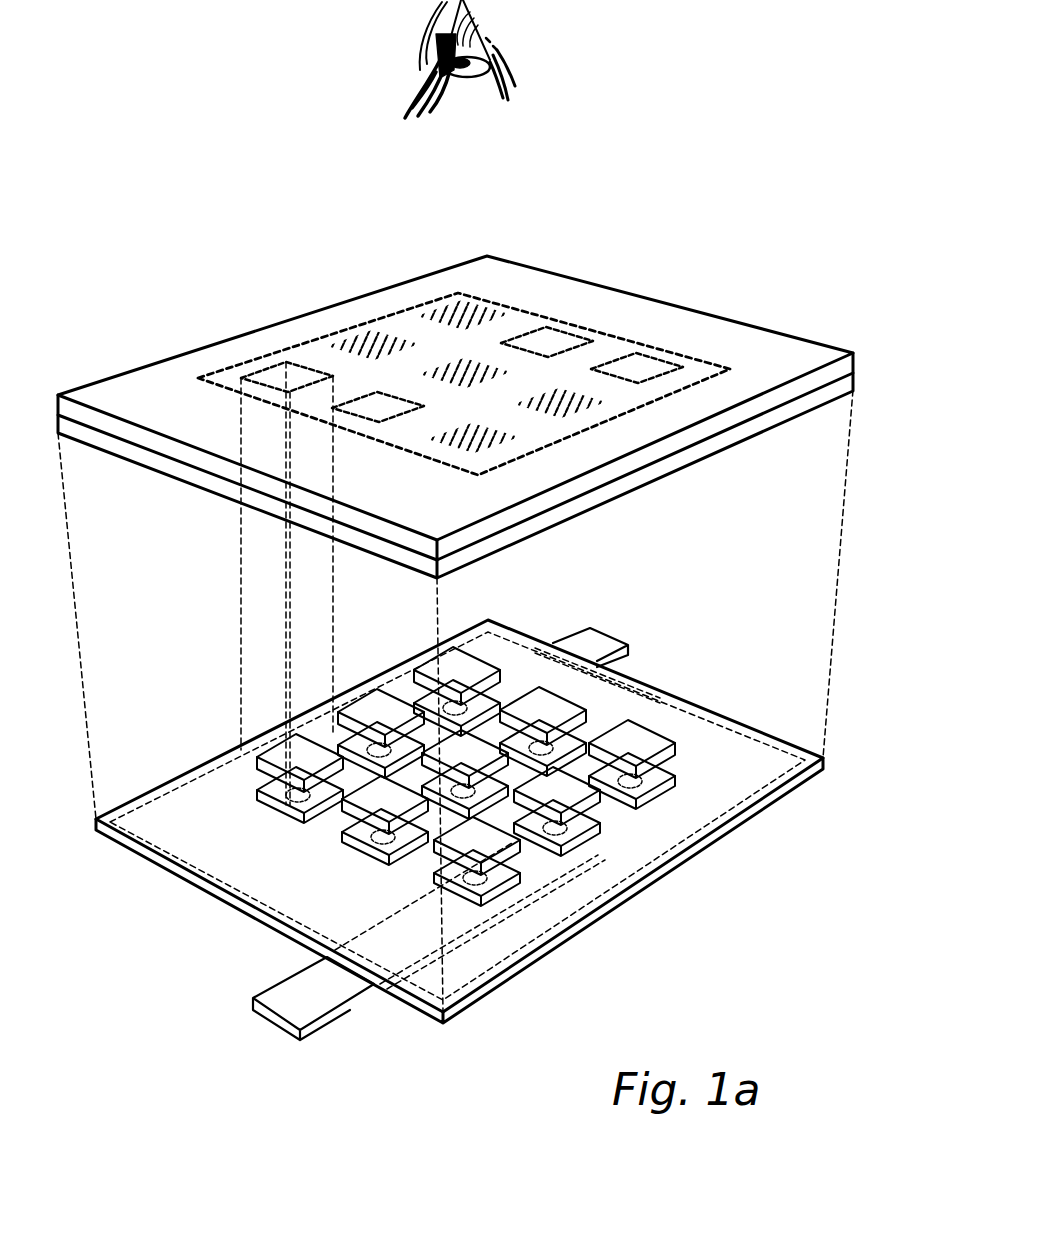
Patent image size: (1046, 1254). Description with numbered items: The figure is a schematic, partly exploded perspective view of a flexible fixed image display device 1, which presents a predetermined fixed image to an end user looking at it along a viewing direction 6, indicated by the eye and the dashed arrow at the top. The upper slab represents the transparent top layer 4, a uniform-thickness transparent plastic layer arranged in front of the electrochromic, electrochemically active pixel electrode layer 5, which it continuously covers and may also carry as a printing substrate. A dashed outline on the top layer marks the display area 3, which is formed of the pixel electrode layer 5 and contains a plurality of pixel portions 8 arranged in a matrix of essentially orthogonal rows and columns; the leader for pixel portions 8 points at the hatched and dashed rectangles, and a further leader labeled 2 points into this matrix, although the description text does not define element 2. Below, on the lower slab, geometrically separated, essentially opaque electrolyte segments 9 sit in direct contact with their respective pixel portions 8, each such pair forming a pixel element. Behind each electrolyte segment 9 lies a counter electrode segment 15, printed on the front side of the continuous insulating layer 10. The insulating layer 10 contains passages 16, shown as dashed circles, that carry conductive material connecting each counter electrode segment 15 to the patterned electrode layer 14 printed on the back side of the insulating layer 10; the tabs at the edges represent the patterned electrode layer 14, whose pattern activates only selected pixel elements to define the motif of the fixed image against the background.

The flexible fixed image display device 1 is at (163, 188).
The hatched electrode pad 2 is at (405, 320).
The display area 3 is at (603, 332).
The transparent top layer 4 is at (145, 438).
The pixel electrode layer 5 is at (178, 468).
The viewing direction 6 is at (462, 88).
The pixel portions 8 is at (688, 400).
The electrolyte segments 9 is at (645, 750).
The insulating layer 10 is at (120, 838).
The patterned electrode layer 14 is at (263, 1017).
The counter electrode segments 15 is at (357, 833).
The passages 16 is at (560, 828).